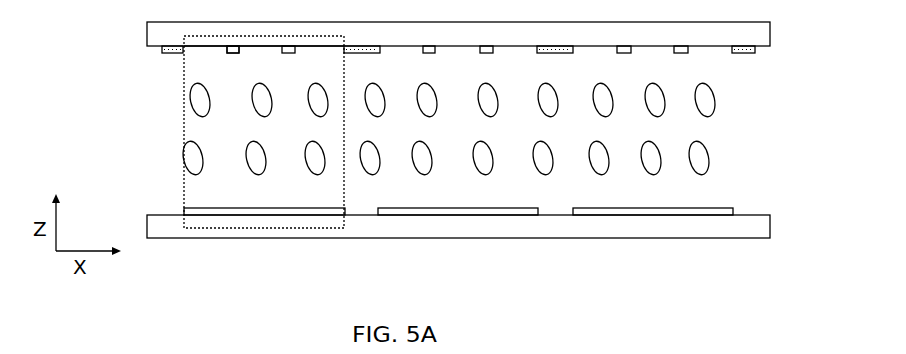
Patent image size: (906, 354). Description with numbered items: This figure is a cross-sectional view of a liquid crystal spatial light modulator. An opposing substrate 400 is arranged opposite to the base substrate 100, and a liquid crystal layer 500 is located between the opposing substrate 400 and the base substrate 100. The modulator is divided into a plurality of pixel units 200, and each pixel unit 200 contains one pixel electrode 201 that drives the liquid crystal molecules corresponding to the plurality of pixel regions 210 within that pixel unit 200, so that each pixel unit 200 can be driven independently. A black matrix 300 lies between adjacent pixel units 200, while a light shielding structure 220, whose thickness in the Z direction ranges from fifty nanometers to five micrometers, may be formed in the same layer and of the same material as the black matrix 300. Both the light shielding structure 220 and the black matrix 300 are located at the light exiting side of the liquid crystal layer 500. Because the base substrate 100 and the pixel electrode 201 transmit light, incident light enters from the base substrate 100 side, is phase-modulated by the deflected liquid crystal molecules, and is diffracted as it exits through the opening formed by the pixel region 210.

The base substrate 100 is at (427, 224).
The pixel unit 200 is at (216, 132).
The pixel electrode 201 is at (410, 200).
The pixel region 210 is at (216, 75).
The light shielding structure 220 is at (163, 89).
The black matrix 300 is at (421, 62).
The opposing substrate 400 is at (429, 36).
The liquid crystal layer 500 is at (403, 128).